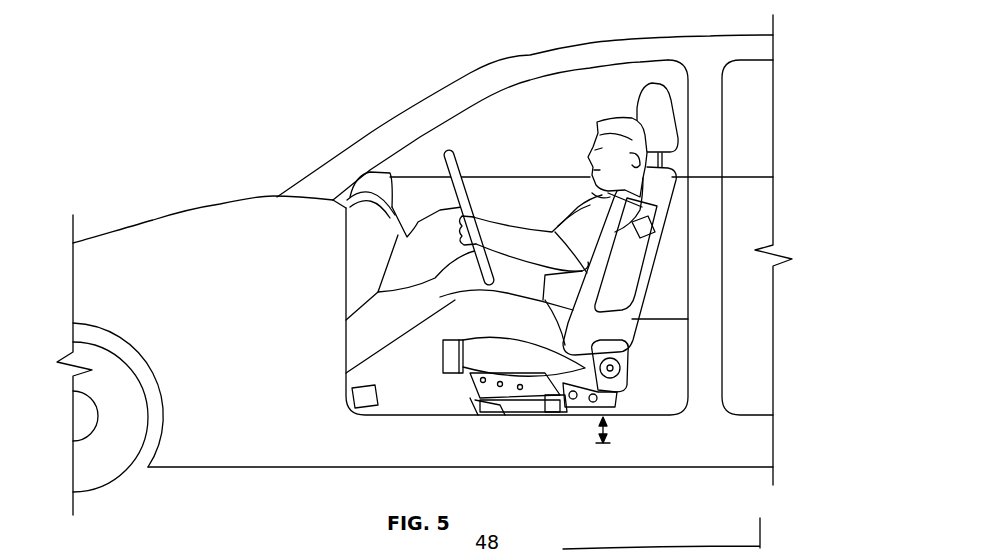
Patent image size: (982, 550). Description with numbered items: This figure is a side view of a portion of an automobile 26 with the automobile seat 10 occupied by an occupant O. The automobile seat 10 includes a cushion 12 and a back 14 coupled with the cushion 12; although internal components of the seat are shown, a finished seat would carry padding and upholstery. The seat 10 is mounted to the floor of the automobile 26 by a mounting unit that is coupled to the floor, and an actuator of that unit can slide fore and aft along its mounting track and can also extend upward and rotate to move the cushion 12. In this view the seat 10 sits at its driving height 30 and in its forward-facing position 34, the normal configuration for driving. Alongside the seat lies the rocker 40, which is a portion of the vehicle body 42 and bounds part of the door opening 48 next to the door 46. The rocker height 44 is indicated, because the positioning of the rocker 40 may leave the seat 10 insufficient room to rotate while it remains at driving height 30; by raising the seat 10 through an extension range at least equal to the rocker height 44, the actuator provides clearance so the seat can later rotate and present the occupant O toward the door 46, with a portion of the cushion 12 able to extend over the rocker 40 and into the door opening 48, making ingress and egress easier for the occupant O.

The automobile seat 10 is at (692, 245).
The cushion 12 is at (560, 412).
The back 14 is at (640, 280).
The automobile 26 is at (173, 477).
The driving height 30 is at (461, 378).
The forward-facing position 34 is at (483, 341).
The rocker 40 is at (512, 426).
The vehicle body 42 is at (250, 453).
The rocker height 44 is at (608, 430).
The door 46 is at (457, 112).
The door opening 48 is at (528, 121).
The occupant O is at (570, 209).